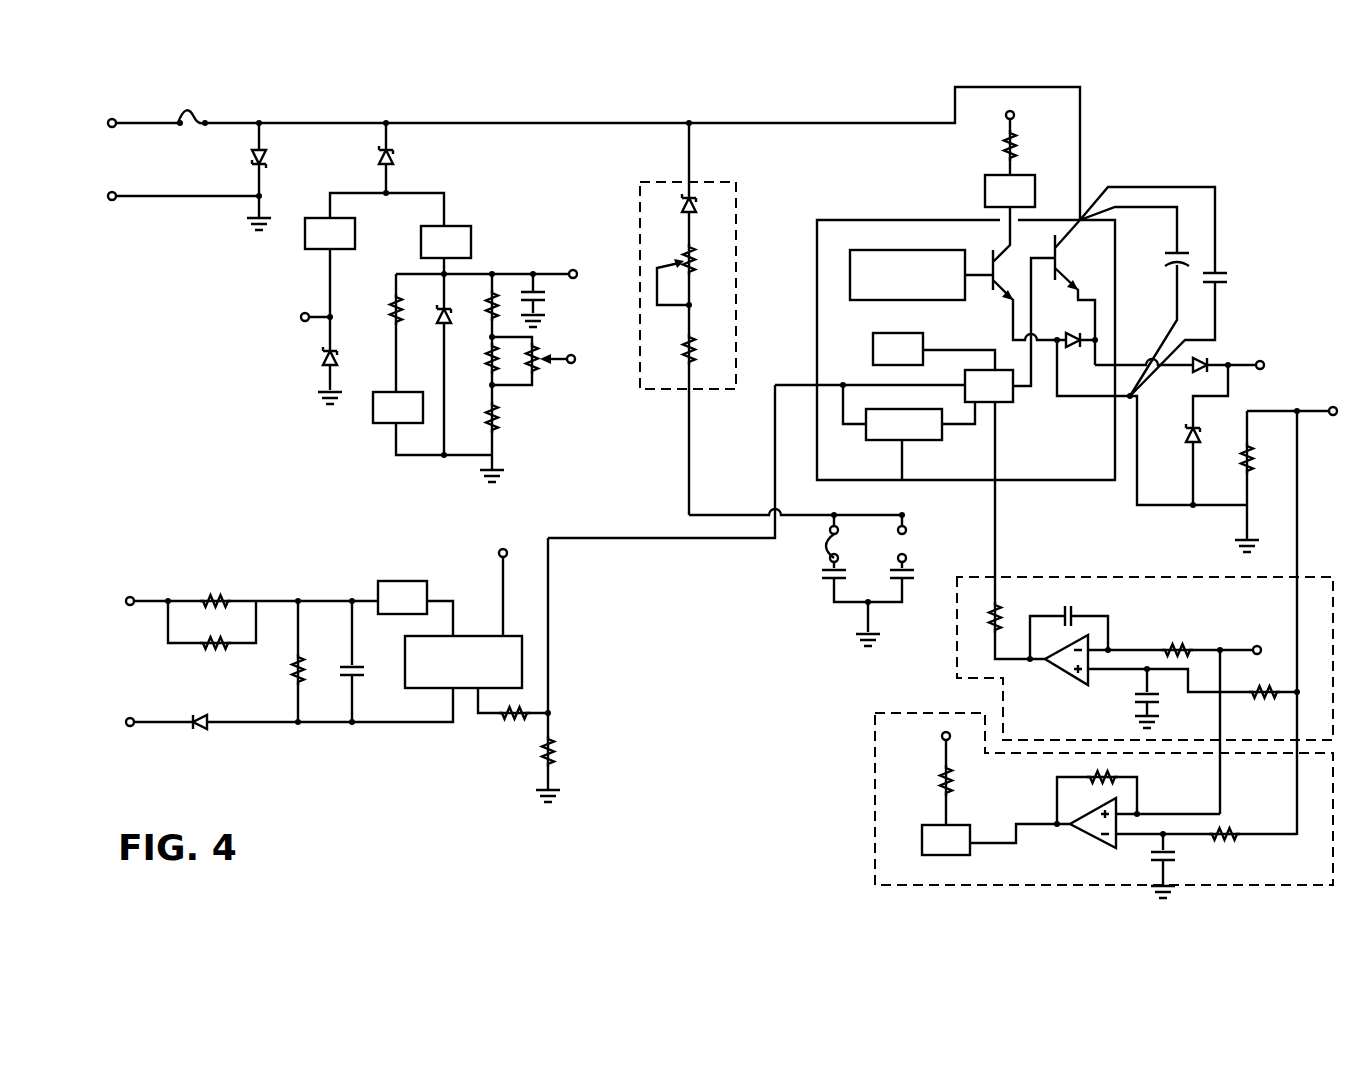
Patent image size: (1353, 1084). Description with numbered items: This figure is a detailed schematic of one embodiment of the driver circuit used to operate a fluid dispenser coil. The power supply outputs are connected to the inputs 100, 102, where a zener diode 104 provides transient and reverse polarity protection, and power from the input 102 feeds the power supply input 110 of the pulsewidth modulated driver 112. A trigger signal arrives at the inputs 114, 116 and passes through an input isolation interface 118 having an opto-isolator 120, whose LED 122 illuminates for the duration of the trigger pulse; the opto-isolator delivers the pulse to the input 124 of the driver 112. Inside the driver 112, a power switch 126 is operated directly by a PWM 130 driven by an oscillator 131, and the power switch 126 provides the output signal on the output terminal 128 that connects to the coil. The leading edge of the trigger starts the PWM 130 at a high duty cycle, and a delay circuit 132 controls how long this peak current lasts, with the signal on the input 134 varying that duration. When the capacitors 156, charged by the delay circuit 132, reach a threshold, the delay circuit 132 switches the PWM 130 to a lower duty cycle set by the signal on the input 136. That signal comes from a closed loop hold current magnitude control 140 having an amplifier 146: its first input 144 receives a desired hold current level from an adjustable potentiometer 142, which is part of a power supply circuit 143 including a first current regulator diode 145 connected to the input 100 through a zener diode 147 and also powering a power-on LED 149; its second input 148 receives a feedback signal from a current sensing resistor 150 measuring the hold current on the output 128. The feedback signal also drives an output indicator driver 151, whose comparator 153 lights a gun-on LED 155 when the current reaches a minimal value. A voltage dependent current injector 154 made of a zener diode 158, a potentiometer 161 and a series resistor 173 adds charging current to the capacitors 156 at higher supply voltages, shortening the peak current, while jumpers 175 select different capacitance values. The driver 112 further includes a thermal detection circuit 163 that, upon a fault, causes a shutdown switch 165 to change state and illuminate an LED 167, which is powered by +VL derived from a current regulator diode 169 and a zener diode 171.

The input 100 is at (116, 130).
The input 102 is at (116, 192).
The zener diode 104 is at (250, 160).
The power supply input 110 is at (1085, 247).
The pulsewidth modulated driver 112 is at (946, 330).
The input 114 is at (127, 604).
The input 116 is at (128, 718).
The input isolation interface 118 is at (268, 629).
The opto-isolator 120 is at (470, 636).
The LED 122 is at (395, 580).
The input 124 is at (796, 352).
The power switch 126 is at (1052, 266).
The output terminal 128 is at (1264, 361).
The PWM 130 is at (1004, 404).
The oscillator 131 is at (873, 348).
The delay circuit 132 is at (904, 441).
The input 134 is at (932, 496).
The input 136 is at (1019, 497).
The hold current magnitude control 140 is at (1115, 635).
The adjustable potentiometer 142 is at (548, 354).
The power supply circuit 143 is at (465, 315).
The first input 144 is at (1110, 648).
The first current regulator diode 145 is at (455, 226).
The amplifier 146 is at (1062, 672).
The zener diode 147 is at (393, 152).
The second input 148 is at (1112, 674).
The power-on LED 149 is at (376, 424).
The current sensing resistor 150 is at (1242, 448).
The output indicator driver 151 is at (1076, 805).
The comparator 153 is at (1076, 832).
The voltage dependent current injector 154 is at (681, 319).
The gun-on LED 155 is at (962, 825).
The capacitors 156 is at (846, 580).
The zener diode 158 is at (697, 203).
The potentiometer 161 is at (700, 264).
The thermal detection circuit 163 is at (880, 300).
The shutdown switch 165 is at (988, 282).
The LED 167 is at (1036, 192).
The current regulator diode 169 is at (322, 218).
The zener diode 171 is at (320, 360).
The series resistor 173 is at (694, 345).
The jumpers 175 is at (806, 556).